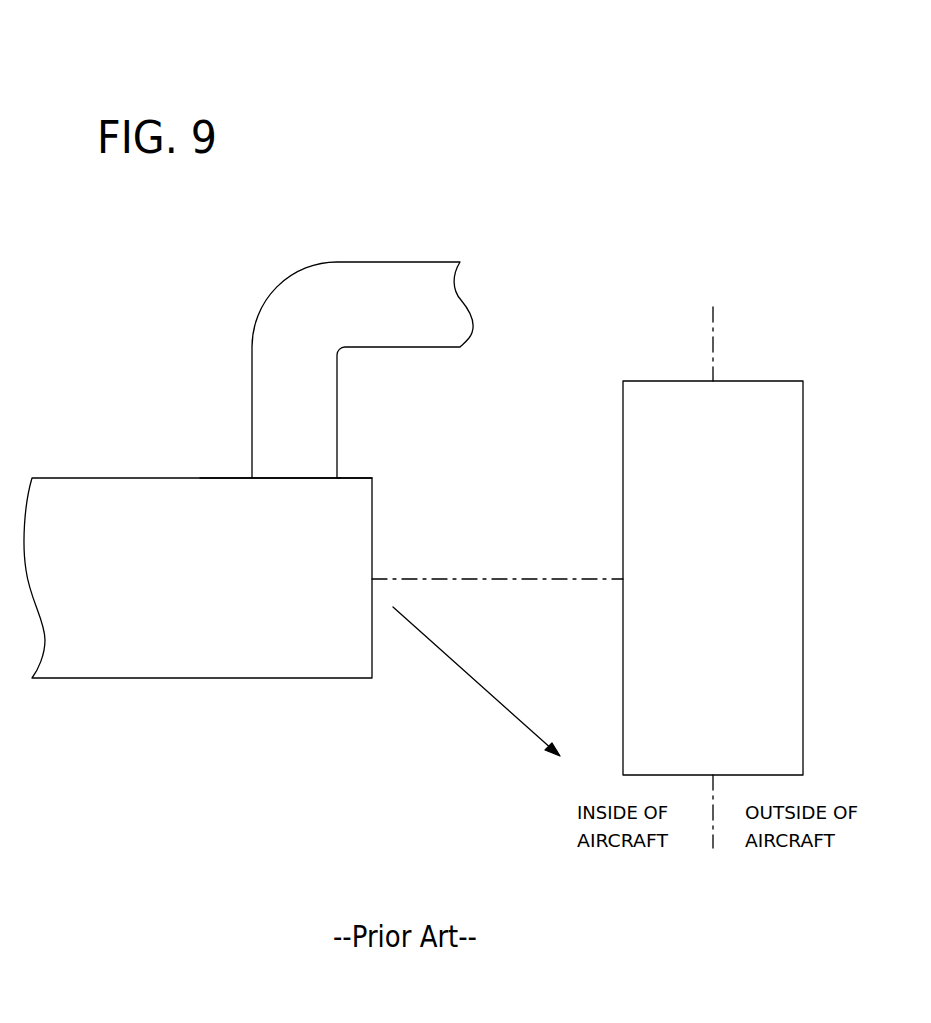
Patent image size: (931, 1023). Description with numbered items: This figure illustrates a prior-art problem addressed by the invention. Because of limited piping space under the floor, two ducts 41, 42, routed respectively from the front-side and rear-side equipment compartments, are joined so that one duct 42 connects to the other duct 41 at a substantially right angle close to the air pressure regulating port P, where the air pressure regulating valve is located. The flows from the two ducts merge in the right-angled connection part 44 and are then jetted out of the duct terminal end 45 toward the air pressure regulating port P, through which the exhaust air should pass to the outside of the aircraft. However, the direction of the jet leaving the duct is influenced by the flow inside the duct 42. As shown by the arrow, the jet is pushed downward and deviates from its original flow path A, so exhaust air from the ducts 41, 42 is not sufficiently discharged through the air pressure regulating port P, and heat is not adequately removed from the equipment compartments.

The duct 41 is at (87, 477).
The duct 42 is at (250, 384).
The right-angled connection part 44 is at (218, 460).
The duct terminal end 45 is at (352, 477).
The original flow path A is at (497, 564).
The air pressure regulating port P is at (648, 380).